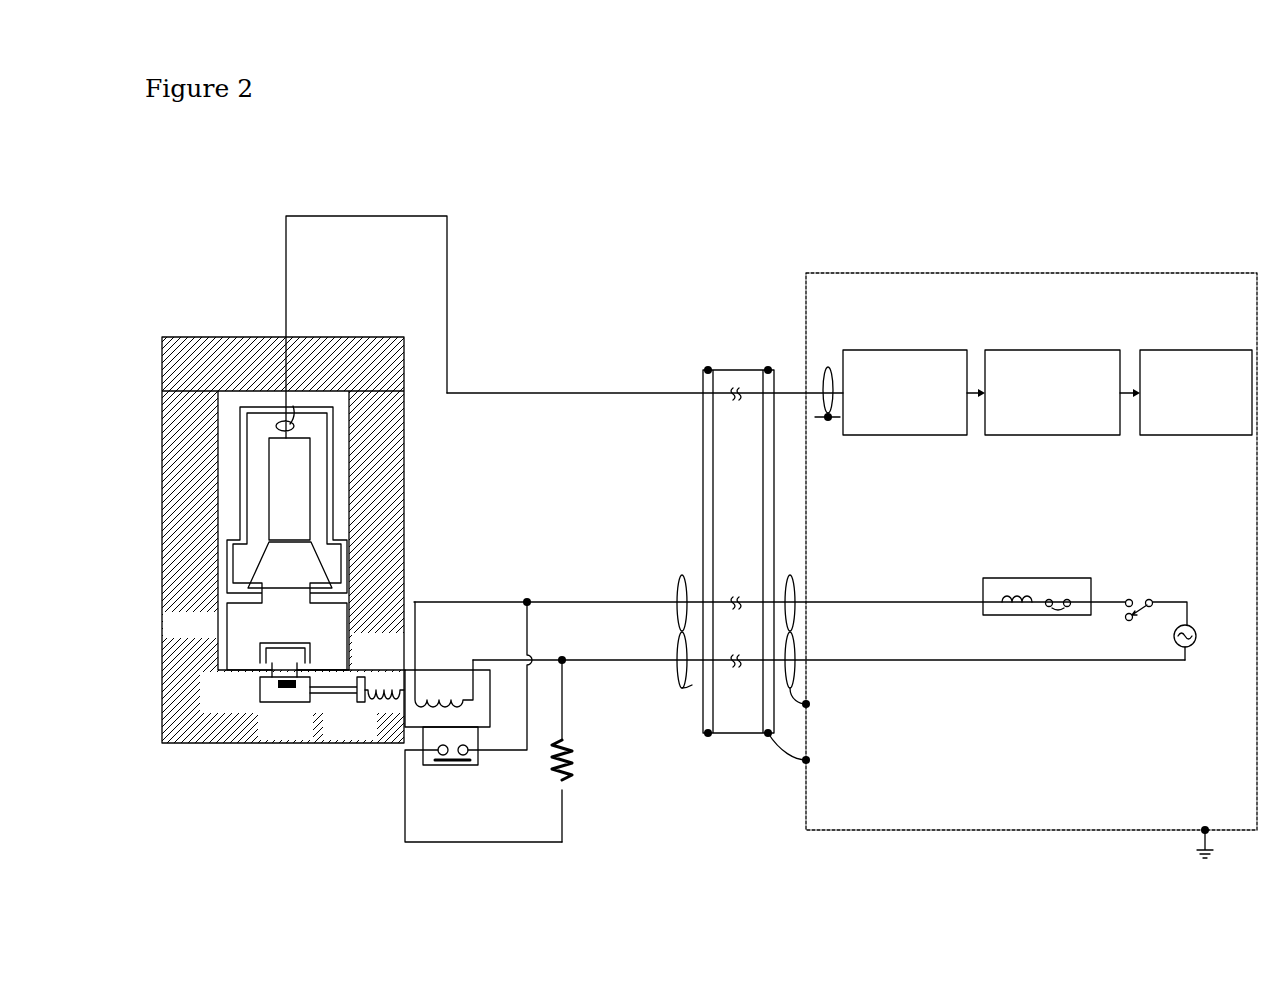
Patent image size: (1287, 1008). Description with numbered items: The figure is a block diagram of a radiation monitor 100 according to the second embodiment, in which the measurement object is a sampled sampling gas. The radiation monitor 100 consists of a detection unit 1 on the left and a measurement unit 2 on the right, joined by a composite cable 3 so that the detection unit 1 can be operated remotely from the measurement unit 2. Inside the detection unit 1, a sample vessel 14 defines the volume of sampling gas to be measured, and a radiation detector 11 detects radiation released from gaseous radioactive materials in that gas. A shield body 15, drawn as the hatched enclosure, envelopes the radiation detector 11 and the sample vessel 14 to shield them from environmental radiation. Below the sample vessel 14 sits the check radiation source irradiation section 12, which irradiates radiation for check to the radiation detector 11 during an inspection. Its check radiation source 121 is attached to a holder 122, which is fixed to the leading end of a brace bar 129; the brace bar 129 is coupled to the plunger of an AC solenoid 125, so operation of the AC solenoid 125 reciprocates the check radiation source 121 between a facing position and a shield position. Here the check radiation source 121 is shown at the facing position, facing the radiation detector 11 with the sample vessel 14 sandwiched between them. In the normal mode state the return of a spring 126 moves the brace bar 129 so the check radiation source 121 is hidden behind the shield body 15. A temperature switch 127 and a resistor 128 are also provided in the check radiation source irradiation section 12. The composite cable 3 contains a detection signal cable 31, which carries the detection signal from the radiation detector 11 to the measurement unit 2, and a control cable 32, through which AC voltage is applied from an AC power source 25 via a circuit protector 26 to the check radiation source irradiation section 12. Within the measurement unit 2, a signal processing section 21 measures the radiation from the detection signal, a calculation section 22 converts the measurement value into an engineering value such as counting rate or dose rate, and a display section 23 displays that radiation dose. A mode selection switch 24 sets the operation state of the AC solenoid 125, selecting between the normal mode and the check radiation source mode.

The radiation monitor 100 is at (1232, 137).
The detection unit 1 is at (213, 308).
The measurement unit 2 is at (1170, 272).
The composite cable 3 is at (727, 738).
The radiation detector 11 is at (267, 482).
The check radiation source irradiation section 12 is at (337, 778).
The sample vessel 14 is at (218, 630).
The shield body 15 is at (336, 336).
The signal processing section 21 is at (893, 348).
The calculation section 22 is at (1030, 348).
The display section 23 is at (1183, 348).
The mode selection switch 24 is at (1140, 596).
The AC power source 25 is at (1197, 622).
The circuit protector 26 is at (1027, 577).
The detection signal cable 31 is at (599, 392).
The control cable 32 is at (683, 575).
The check radiation source 121 is at (283, 703).
The holder 122 is at (259, 688).
The AC solenoid 125 is at (446, 668).
The spring 126 is at (376, 670).
The temperature switch 127 is at (448, 767).
The resistor 128 is at (577, 758).
The brace bar 129 is at (350, 697).